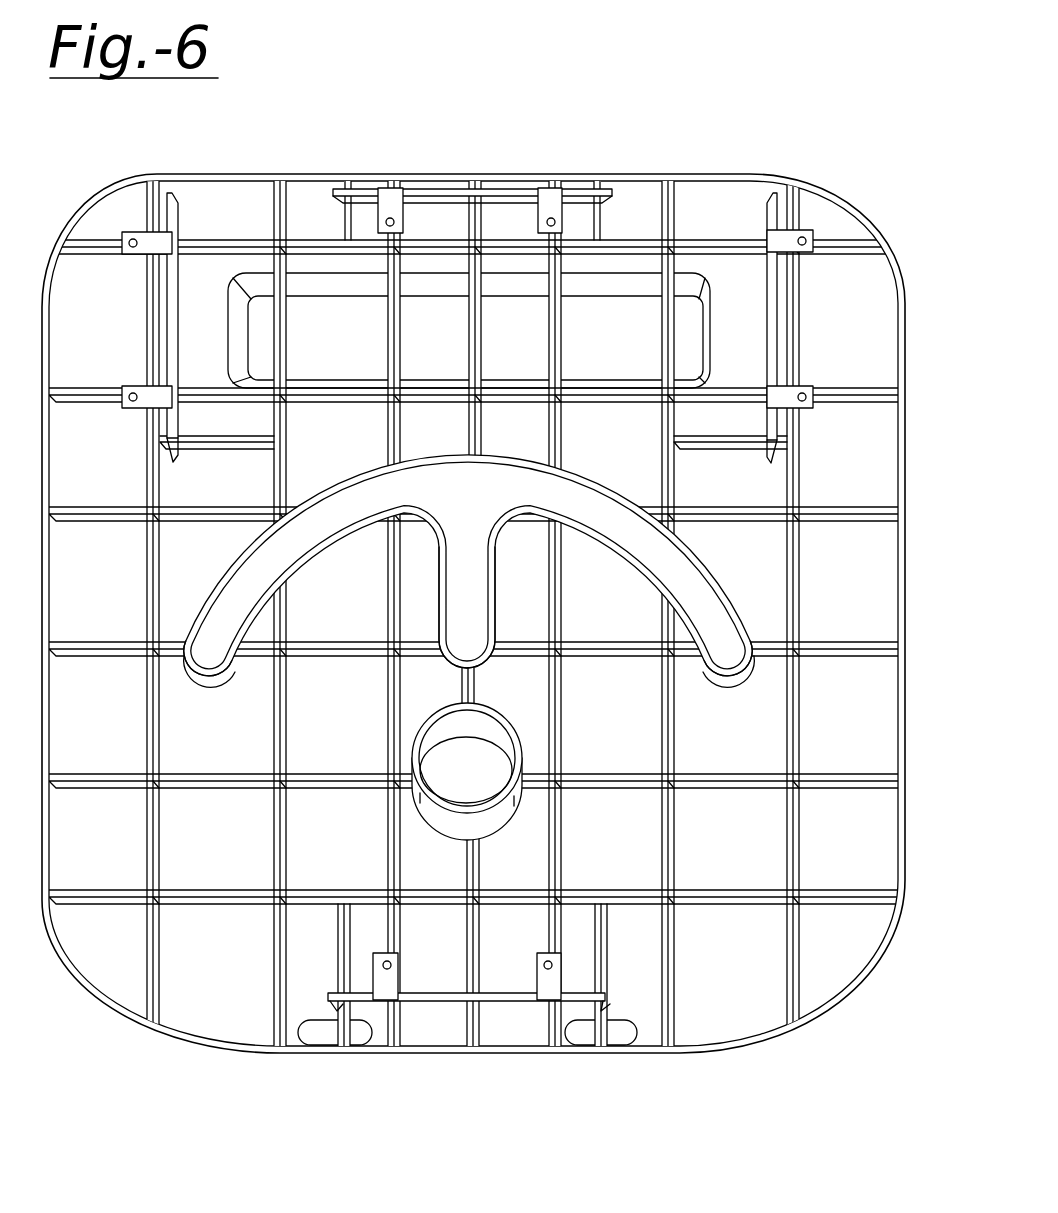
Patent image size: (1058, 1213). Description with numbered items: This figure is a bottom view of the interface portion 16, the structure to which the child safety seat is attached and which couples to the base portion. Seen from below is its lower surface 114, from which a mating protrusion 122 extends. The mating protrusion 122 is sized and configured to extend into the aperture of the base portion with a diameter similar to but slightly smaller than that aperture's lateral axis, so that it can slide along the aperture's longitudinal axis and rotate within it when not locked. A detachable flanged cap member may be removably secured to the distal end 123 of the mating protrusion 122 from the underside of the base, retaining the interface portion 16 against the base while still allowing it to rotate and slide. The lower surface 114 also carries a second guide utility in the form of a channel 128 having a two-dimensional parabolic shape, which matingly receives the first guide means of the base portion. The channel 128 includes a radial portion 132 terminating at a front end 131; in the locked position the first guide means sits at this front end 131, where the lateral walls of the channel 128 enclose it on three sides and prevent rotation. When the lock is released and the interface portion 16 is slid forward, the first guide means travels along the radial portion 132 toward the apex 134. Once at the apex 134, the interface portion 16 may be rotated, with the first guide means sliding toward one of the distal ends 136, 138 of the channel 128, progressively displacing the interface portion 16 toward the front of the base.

The interface portion 16 is at (797, 157).
The lower surface 114 is at (777, 993).
The mating protrusion 122 is at (493, 818).
The distal end 123 is at (512, 738).
The channel 128 is at (722, 653).
The front end 131 is at (445, 658).
The radial portion 132 is at (480, 592).
The apex 134 is at (478, 440).
The distal end 136 is at (193, 668).
The distal end 138 is at (746, 662).